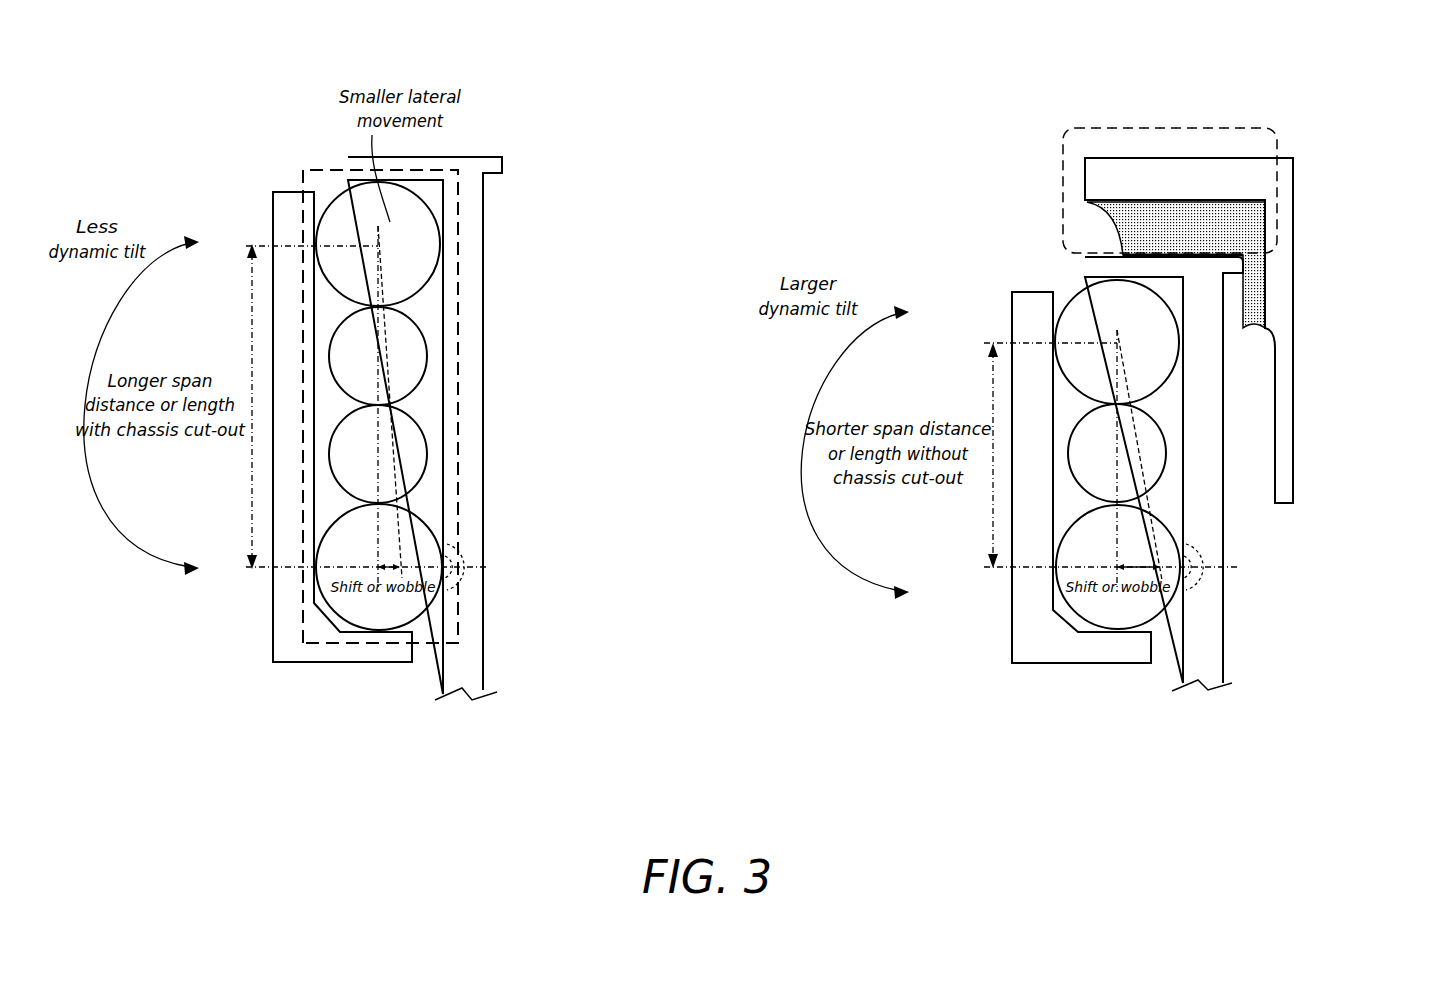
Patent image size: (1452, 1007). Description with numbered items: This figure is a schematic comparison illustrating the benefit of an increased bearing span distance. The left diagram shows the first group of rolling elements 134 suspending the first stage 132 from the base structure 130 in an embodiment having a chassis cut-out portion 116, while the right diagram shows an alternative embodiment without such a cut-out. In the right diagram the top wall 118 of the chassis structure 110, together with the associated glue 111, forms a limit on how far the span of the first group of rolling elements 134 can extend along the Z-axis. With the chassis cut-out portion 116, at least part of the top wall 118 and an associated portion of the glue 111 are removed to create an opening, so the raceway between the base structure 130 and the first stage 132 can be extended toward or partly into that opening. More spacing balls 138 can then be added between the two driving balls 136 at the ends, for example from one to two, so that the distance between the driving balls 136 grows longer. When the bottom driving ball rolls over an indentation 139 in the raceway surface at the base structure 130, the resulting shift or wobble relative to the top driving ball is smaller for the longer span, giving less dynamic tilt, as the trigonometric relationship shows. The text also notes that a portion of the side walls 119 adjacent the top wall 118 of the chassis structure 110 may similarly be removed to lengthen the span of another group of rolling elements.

The chassis structure 110 is at (1293, 252).
The glue 111 is at (1107, 207).
The chassis cut-out portion 116 is at (1100, 128).
The top wall 118 is at (1262, 168).
The side walls 119 is at (1283, 318).
The base structure 130 is at (468, 700).
The first stage 132 is at (342, 663).
The first group of rolling elements 134 is at (458, 233).
The driving balls 136 is at (253, 642).
The spacing balls 138 is at (412, 467).
The indentation 139 is at (1297, 552).